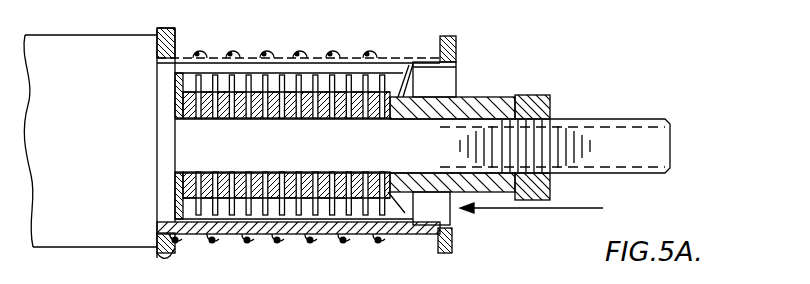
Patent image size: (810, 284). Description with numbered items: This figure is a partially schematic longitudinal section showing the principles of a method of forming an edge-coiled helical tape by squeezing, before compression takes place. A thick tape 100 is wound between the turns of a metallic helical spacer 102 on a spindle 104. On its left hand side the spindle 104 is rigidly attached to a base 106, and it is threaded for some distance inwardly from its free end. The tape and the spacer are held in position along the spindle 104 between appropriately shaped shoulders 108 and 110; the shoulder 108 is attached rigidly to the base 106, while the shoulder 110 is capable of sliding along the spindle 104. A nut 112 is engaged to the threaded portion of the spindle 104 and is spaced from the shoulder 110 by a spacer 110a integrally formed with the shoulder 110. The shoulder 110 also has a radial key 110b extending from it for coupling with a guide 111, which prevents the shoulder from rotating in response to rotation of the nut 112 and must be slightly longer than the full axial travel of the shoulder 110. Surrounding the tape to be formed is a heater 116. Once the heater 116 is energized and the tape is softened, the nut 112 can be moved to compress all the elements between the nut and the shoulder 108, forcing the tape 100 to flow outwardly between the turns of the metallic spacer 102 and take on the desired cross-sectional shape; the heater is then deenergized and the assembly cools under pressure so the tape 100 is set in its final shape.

The thick tape 100 is at (364, 203).
The metallic helical spacer 102 is at (372, 78).
The spindle 104 is at (307, 156).
The base 106 is at (113, 98).
The shoulder 108 is at (181, 78).
The shoulder 110 is at (393, 222).
The spacer 110a is at (443, 195).
The radial key 110b is at (403, 75).
The guide 111 is at (456, 57).
The nut 112 is at (541, 188).
The heater 116 is at (278, 244).